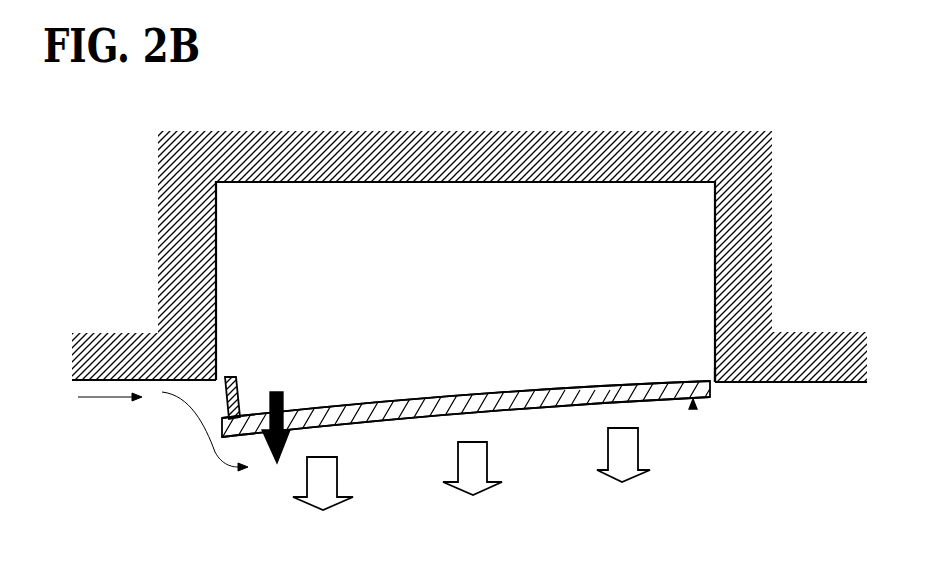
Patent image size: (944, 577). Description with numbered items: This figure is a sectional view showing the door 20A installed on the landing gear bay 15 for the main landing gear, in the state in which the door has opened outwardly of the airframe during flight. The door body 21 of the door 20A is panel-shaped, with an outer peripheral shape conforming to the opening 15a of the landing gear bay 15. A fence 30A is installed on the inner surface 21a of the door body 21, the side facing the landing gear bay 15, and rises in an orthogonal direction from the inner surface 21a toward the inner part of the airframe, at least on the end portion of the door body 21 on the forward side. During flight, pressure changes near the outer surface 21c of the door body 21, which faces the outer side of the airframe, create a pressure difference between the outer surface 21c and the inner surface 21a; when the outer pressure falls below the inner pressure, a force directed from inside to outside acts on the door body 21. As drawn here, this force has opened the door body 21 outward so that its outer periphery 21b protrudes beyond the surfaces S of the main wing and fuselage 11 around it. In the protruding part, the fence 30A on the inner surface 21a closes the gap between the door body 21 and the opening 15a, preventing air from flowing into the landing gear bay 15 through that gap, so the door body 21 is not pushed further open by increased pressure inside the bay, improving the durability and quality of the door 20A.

The landing gear bay 15 is at (713, 223).
The opening of the landing gear bay 15a is at (717, 366).
The fuselage 11 is at (826, 384).
The door body 21 is at (560, 410).
The inner surface of the door body 21a is at (568, 389).
The outer periphery of the door body 21b is at (222, 424).
The outer surface of the door body 21c is at (395, 422).
The fence 30A is at (237, 392).
The door 20A is at (693, 408).